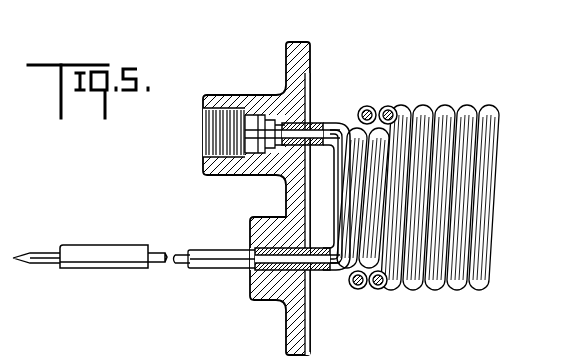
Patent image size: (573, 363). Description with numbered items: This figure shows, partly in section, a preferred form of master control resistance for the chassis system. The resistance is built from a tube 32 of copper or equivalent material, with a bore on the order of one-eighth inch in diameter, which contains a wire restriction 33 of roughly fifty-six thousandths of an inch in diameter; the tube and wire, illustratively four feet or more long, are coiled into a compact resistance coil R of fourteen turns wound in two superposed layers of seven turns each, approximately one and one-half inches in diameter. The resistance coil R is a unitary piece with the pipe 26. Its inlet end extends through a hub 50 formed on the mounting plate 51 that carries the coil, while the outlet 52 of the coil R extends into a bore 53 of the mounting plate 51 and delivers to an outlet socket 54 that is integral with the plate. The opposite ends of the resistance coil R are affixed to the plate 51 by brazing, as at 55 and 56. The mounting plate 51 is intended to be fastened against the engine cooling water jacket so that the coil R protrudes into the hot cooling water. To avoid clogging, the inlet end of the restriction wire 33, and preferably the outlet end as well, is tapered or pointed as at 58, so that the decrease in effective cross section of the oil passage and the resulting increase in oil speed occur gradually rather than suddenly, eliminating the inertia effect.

The mounting plate 51 is at (308, 44).
The outlet socket 54 is at (213, 106).
The bore 53 is at (276, 122).
The brazing 56 is at (311, 122).
The outlet 52 is at (325, 127).
The hub 50 is at (272, 276).
The brazing 55 is at (307, 275).
The wire restriction 33 is at (316, 272).
The pipe 26 is at (104, 263).
The tapered end 58 is at (43, 259).
The tube 32 is at (418, 287).
The resistance coil R is at (514, 248).